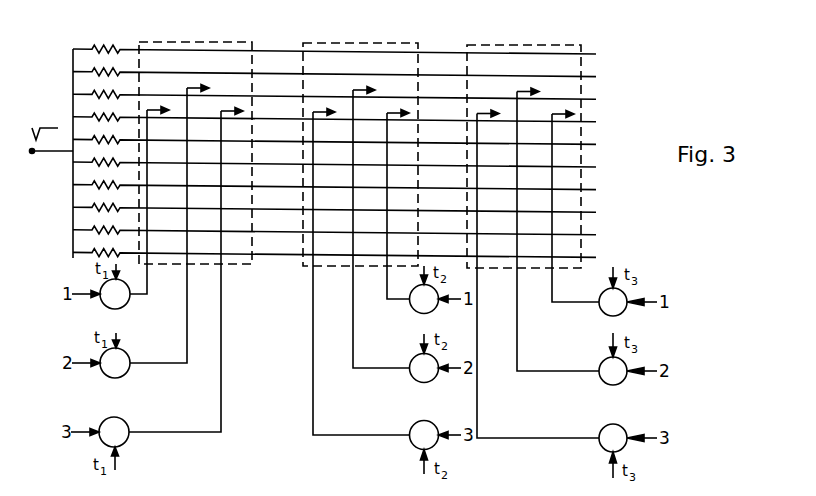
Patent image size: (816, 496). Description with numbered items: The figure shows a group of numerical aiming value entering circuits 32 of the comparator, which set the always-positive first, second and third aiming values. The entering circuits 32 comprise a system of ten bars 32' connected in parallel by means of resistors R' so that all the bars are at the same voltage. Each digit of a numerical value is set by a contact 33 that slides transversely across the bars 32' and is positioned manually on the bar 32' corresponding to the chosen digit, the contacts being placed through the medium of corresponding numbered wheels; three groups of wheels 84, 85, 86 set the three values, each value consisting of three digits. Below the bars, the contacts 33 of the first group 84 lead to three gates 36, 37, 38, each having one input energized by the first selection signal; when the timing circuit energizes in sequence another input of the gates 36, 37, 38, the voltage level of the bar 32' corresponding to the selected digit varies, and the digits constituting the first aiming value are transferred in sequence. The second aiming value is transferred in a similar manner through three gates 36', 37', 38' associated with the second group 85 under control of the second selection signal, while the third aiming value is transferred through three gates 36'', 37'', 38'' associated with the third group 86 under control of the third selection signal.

The entering circuits 32 is at (369, 159).
The bars 32' is at (355, 159).
The resistors R' is at (107, 37).
The contact 33 is at (374, 101).
The group of wheels 84 is at (195, 141).
The group of wheels 85 is at (360, 142).
The group of wheels 86 is at (524, 143).
The gate 36 is at (131, 301).
The gate 37 is at (131, 376).
The gate 38 is at (129, 442).
The gate 36' is at (403, 310).
The gate 37' is at (406, 383).
The gate 38' is at (400, 448).
The gate 36'' is at (593, 314).
The gate 37'' is at (591, 384).
The gate 38'' is at (592, 451).